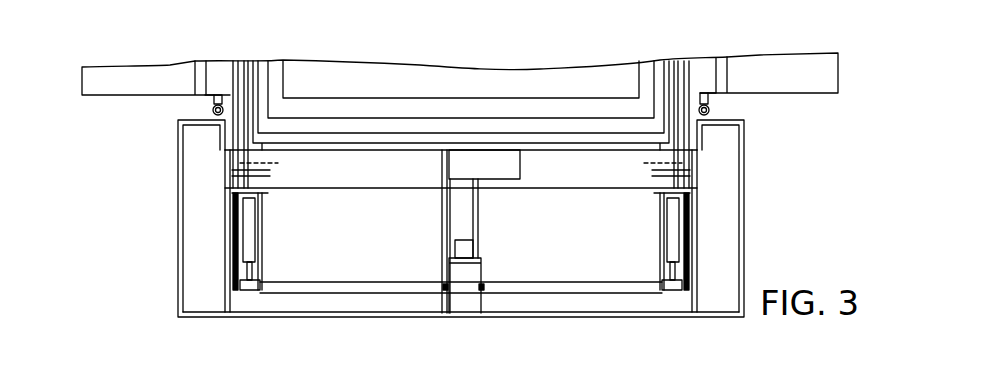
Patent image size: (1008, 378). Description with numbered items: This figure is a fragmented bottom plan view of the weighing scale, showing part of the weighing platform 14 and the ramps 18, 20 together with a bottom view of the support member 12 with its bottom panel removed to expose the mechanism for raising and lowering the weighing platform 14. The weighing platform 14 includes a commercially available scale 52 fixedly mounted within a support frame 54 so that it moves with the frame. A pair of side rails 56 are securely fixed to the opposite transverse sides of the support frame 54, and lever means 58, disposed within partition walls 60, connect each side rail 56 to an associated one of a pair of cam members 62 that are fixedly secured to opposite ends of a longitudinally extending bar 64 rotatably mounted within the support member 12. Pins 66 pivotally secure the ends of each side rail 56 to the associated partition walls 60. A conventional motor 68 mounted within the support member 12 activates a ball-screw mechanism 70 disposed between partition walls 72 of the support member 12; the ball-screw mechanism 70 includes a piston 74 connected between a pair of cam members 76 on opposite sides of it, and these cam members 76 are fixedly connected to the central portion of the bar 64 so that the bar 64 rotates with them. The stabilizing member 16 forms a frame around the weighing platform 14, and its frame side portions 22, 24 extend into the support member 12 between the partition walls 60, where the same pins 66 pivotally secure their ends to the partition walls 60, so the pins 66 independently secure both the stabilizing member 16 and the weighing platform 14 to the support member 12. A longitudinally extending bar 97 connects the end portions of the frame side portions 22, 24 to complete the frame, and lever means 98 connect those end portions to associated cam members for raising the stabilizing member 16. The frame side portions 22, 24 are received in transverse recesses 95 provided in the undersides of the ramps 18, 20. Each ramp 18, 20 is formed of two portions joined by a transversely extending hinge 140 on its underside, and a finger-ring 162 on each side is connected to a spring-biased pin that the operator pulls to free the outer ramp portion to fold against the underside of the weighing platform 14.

The support member 12 is at (746, 181).
The weighing platform 14 is at (600, 67).
The stabilizing member 16 is at (688, 88).
The ramp 18 is at (107, 75).
The ramp 20 is at (800, 62).
The frame side portion 22 is at (236, 60).
The frame side portion 24 is at (690, 60).
The scale 52 is at (442, 82).
The support frame 54 is at (333, 125).
The side rails 56 is at (673, 63).
The lever means 58 is at (251, 218).
The partition walls 60 is at (226, 263).
The cam members 62 is at (258, 286).
The longitudinally extending bar 64 is at (338, 286).
The pins 66 is at (461, 172).
The motor 68 is at (520, 168).
The ball-screw mechanism 70 is at (462, 222).
The partition walls 72 is at (443, 213).
The piston 74 is at (470, 253).
The cam members 76 is at (442, 284).
The transverse recesses 95 is at (225, 82).
The longitudinally extending bar 97 is at (345, 190).
The lever means 98 is at (232, 216).
The hinge 140 is at (205, 88).
The finger-ring 162 is at (214, 114).